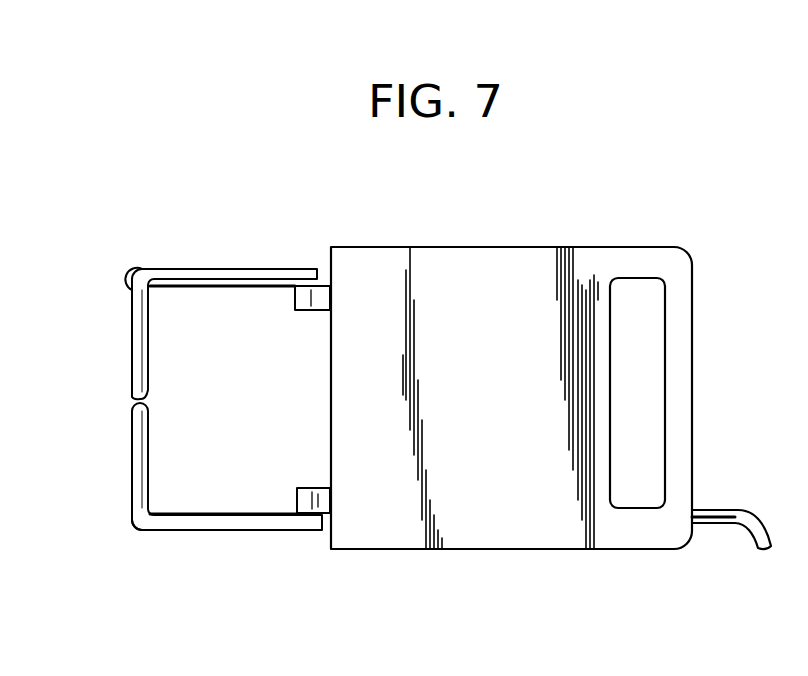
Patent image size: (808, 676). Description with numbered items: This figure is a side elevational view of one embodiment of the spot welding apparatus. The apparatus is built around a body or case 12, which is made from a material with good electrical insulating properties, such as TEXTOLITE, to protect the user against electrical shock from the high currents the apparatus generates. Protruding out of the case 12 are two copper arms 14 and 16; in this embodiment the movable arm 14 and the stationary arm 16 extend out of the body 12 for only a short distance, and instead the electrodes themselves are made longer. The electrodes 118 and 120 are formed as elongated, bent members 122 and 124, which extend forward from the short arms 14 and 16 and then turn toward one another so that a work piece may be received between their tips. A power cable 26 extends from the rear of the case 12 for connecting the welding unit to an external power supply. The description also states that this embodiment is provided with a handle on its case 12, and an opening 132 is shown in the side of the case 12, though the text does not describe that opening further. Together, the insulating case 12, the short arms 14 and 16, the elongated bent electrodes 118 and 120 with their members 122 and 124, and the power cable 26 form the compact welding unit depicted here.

The body or case 12 is at (548, 247).
The copper arm 14 is at (295, 300).
The copper arm 16 is at (308, 488).
The power cable 26 is at (745, 528).
The electrode 118 is at (148, 345).
The electrode 120 is at (150, 448).
The elongated, bent member 122 is at (130, 298).
The elongated, bent member 124 is at (132, 505).
The slot opening 132 is at (660, 441).